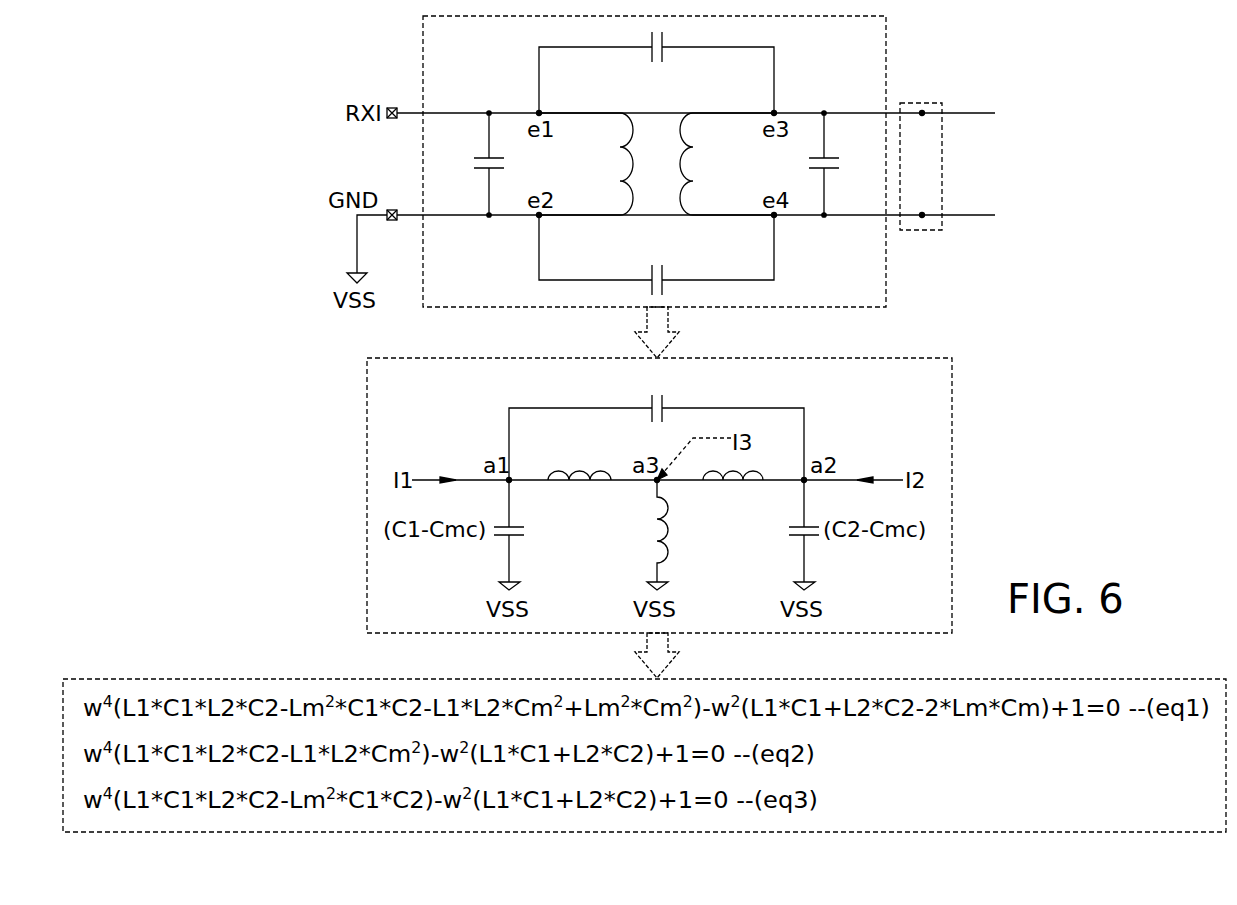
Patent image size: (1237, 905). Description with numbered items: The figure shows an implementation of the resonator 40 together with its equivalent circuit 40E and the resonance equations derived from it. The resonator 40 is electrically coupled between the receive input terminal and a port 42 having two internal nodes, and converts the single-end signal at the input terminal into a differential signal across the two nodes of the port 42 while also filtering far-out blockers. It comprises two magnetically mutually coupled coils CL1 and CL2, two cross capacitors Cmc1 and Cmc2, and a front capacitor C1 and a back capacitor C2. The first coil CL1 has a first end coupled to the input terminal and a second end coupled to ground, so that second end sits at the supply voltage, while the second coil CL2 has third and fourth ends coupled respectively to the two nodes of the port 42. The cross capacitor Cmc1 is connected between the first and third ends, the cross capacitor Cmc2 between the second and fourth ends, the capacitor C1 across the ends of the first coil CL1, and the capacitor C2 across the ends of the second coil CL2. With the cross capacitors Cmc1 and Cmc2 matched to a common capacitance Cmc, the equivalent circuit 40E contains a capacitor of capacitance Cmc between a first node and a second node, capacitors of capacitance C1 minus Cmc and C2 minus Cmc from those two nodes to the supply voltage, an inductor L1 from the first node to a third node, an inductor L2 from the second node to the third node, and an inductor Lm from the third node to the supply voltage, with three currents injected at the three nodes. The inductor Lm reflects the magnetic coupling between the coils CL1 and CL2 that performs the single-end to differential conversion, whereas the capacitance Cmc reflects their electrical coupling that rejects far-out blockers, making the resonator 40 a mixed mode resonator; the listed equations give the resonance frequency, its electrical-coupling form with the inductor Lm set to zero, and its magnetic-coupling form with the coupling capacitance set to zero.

The resonator 40 is at (887, 62).
The port 42 is at (925, 230).
The equivalent circuit 40E is at (781, 358).
The front capacitor C1 is at (473, 164).
The back capacitor C2 is at (841, 164).
The first coil CL1 is at (586, 164).
The second coil CL2 is at (727, 164).
The first cross capacitor Cmc1 is at (656, 72).
The second cross capacitor Cmc2 is at (656, 255).
The capacitance Cmc is at (656, 423).
The inductor L1 is at (579, 490).
The inductor L2 is at (733, 490).
The inductor Lm is at (675, 535).